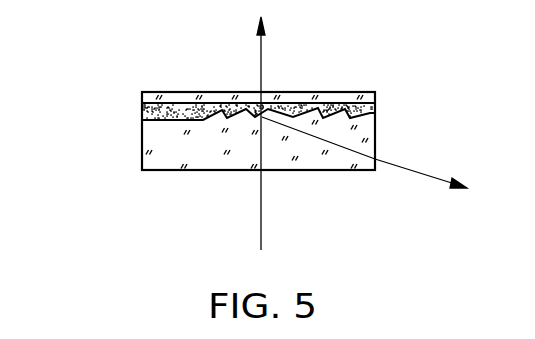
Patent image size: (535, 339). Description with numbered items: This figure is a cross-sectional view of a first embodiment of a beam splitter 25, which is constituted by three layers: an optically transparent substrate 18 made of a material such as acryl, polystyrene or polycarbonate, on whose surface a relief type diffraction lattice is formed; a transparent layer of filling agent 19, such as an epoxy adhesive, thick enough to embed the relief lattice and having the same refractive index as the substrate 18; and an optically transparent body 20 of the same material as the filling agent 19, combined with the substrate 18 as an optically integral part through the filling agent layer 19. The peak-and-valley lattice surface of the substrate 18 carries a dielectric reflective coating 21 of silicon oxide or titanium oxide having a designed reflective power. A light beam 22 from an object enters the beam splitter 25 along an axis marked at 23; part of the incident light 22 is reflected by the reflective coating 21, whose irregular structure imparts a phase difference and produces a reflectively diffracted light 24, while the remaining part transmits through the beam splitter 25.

The optically transparent substrate 18 is at (142, 151).
The transparent layer of filling agent 19 is at (142, 116).
The optically transparent body 20 is at (143, 99).
The reflective coating 21 is at (325, 112).
The light beam 22 is at (261, 240).
The normal axis direction 23 is at (262, 45).
The reflectively diffracted light 24 is at (437, 177).
The beam splitter 25 is at (95, 90).